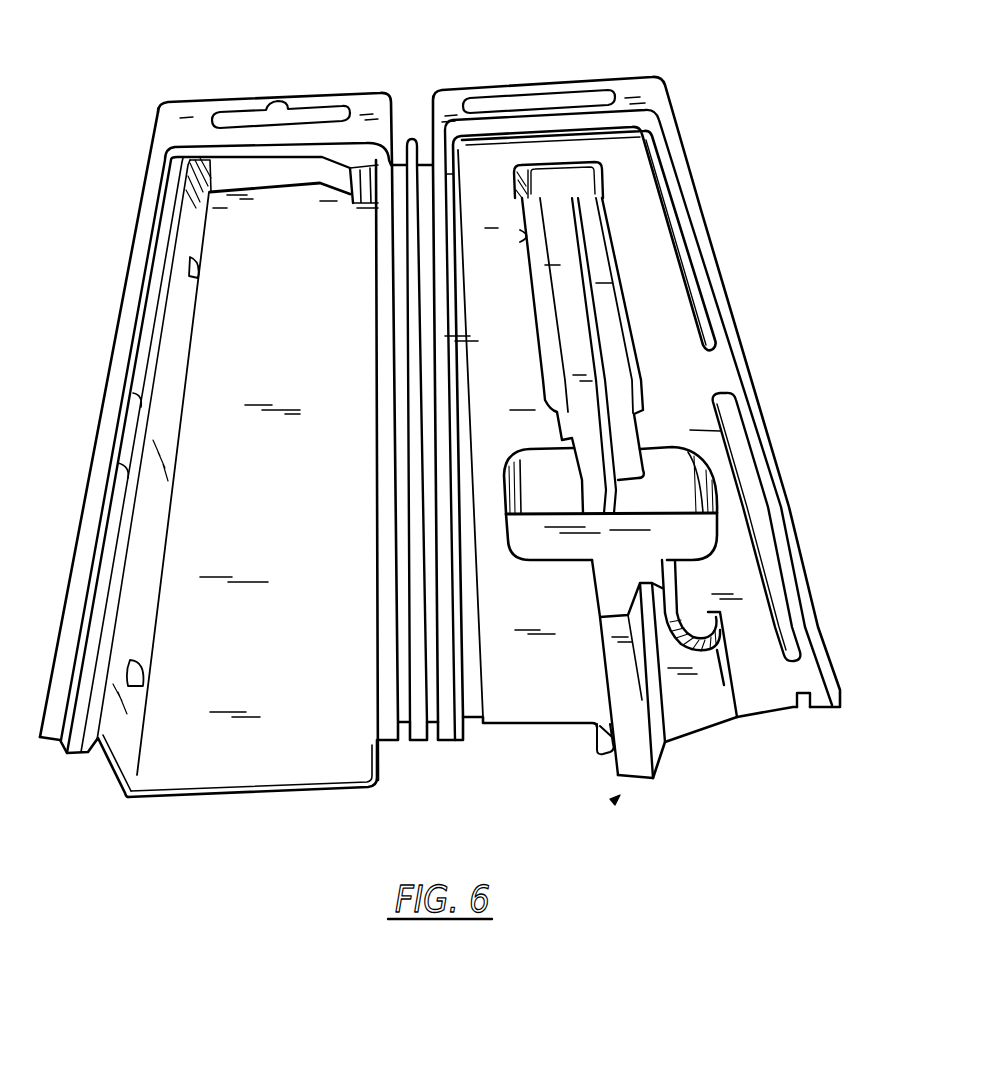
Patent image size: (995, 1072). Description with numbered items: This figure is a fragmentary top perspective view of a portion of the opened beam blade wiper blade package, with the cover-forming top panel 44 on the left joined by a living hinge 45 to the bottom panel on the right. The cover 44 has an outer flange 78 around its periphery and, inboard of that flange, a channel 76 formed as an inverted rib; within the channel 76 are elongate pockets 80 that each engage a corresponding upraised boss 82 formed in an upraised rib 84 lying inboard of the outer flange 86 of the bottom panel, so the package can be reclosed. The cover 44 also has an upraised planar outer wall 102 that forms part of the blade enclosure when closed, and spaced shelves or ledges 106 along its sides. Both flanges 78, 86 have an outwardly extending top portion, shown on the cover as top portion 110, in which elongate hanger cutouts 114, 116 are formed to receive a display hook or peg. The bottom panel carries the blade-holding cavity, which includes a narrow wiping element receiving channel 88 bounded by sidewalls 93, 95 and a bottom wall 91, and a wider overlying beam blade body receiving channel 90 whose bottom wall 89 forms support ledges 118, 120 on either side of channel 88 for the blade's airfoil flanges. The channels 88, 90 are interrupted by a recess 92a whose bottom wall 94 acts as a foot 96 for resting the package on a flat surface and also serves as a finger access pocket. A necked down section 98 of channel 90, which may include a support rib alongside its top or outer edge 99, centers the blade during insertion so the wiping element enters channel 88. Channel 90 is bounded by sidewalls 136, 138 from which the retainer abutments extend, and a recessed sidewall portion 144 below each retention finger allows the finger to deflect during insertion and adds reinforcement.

The top panel 44 is at (233, 799).
The living hinge 45 is at (412, 121).
The channel 76 is at (80, 757).
The outer flange 78 is at (87, 552).
The elongate pockets 80 is at (155, 300).
The upraised boss 82 is at (702, 305).
The upraised rib 84 is at (805, 695).
The outer flange 86 is at (735, 357).
The wiping element receiving channel 88 is at (588, 297).
The bottom wall 89 is at (603, 288).
The beam blade body receiving channel 90 is at (647, 357).
The bottom wall 91 is at (642, 780).
The recess 92a is at (700, 457).
The sidewall 93 is at (605, 770).
The bottom wall 94 is at (652, 562).
The sidewall 95 is at (665, 757).
The foot 96 is at (617, 798).
The necked down section 98 is at (645, 418).
The top or outer edge 99 is at (722, 640).
The outer wall 102 is at (302, 495).
The shelves or ledges 106 is at (193, 277).
The top portion 110 is at (197, 62).
The hanger cutout 114 is at (257, 110).
The hanger cutout 116 is at (499, 102).
The support ledge 118 is at (600, 245).
The support ledge 120 is at (537, 193).
The sidewall 136 is at (598, 200).
The sidewall 138 is at (520, 236).
The recessed sidewall portion 144 is at (595, 744).